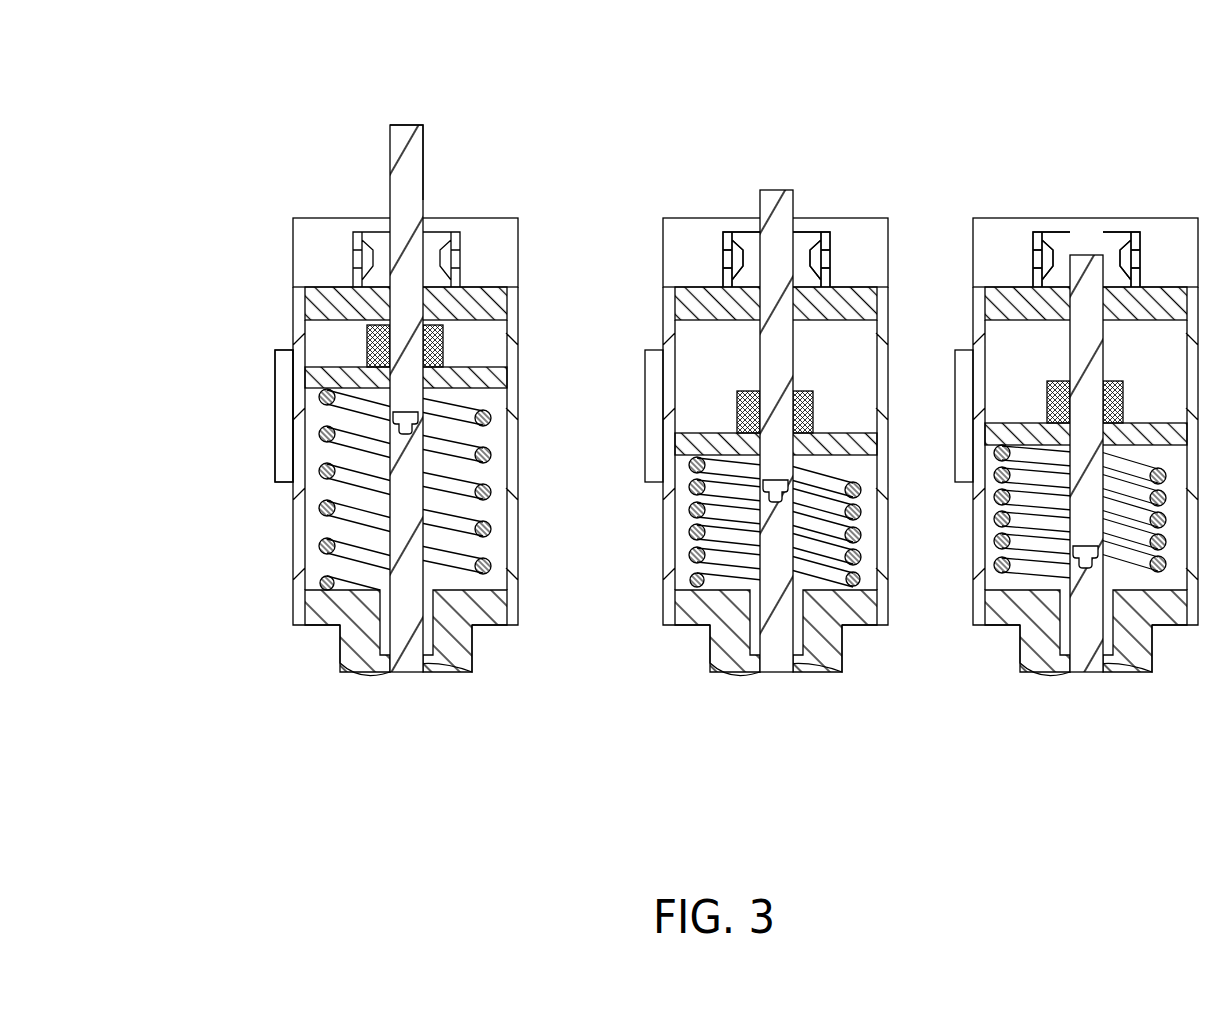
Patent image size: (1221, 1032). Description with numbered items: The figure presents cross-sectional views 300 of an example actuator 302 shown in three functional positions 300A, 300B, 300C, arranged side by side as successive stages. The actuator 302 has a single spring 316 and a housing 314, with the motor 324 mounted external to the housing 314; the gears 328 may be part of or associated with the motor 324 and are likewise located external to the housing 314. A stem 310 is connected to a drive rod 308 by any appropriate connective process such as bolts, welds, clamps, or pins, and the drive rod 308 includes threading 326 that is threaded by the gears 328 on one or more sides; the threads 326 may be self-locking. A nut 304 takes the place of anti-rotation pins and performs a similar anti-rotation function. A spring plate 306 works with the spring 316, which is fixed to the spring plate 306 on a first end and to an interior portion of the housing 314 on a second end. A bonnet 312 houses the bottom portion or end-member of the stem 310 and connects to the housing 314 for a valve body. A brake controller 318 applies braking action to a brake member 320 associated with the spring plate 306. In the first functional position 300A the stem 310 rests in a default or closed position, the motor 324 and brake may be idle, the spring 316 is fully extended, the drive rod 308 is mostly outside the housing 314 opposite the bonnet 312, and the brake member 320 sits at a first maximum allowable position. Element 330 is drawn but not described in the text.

The cross-sectional views 300 is at (915, 125).
The first functional position 300A is at (387, 730).
The second functional position 300B is at (750, 730).
The third functional position 300C is at (1098, 735).
The actuator 302 is at (325, 358).
The nut 304 is at (440, 343).
The spring plate 306 is at (514, 373).
The drive rod 308 is at (400, 168).
The stem 310 is at (417, 527).
The bonnet 312 is at (343, 653).
The housing 314 is at (290, 590).
The spring 316 is at (330, 547).
The brake controller 318 is at (275, 452).
The brake member 320 is at (297, 367).
The motor 324 is at (300, 273).
The threading 326 is at (427, 202).
The gears 328 is at (363, 237).
The mounting flange 330 is at (297, 420).